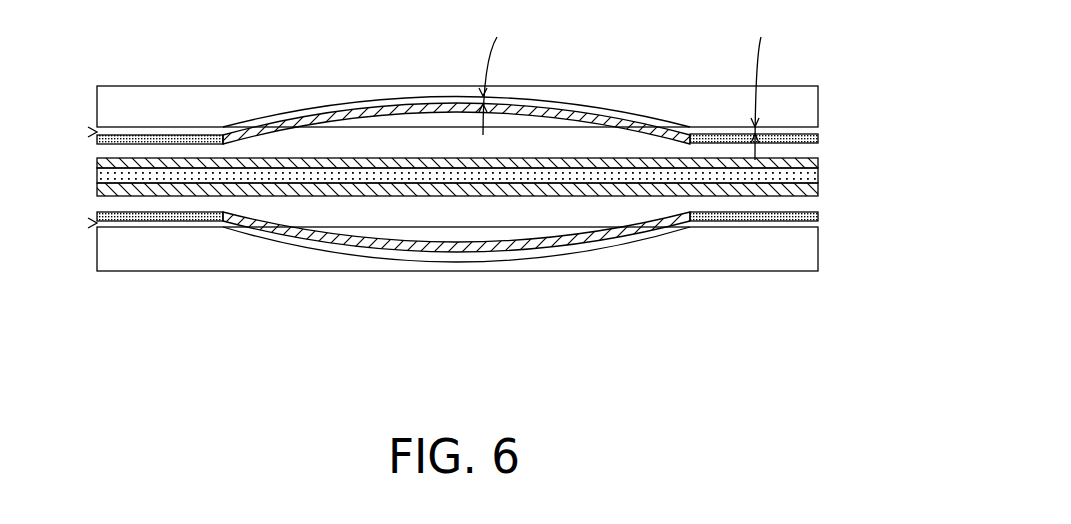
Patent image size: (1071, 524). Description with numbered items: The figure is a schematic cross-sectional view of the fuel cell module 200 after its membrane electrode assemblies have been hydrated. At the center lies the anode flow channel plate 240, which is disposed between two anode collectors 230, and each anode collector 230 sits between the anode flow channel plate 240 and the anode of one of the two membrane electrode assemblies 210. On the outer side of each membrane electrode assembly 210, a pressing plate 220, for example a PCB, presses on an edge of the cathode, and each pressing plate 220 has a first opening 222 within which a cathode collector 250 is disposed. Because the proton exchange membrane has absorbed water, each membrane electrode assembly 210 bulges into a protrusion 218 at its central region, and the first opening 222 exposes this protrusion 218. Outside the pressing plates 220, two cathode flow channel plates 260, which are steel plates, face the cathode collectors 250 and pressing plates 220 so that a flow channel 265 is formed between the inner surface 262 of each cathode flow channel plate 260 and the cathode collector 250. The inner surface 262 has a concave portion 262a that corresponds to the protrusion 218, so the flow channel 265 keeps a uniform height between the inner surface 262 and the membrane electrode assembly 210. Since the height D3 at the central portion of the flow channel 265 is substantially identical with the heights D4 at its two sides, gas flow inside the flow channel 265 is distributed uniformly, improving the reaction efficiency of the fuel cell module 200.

The fuel cell module 200 is at (467, 204).
The membrane electrode assembly 210 is at (818, 140).
The protrusion 218 is at (450, 118).
The pressing plate 220 is at (818, 127).
The first opening 222 is at (248, 131).
The anode collector 230 is at (795, 150).
The anode flow channel plate 240 is at (793, 177).
The cathode collector 250 is at (650, 133).
The cathode flow channel plate 260 is at (802, 100).
The inner surface 262 is at (193, 140).
The concave portion 262a is at (395, 112).
The flow channel 265 is at (90, 132).
The height of the central portion of the flow channel D3 is at (495, 70).
The height of the two sides of the flow channel D4 is at (761, 83).